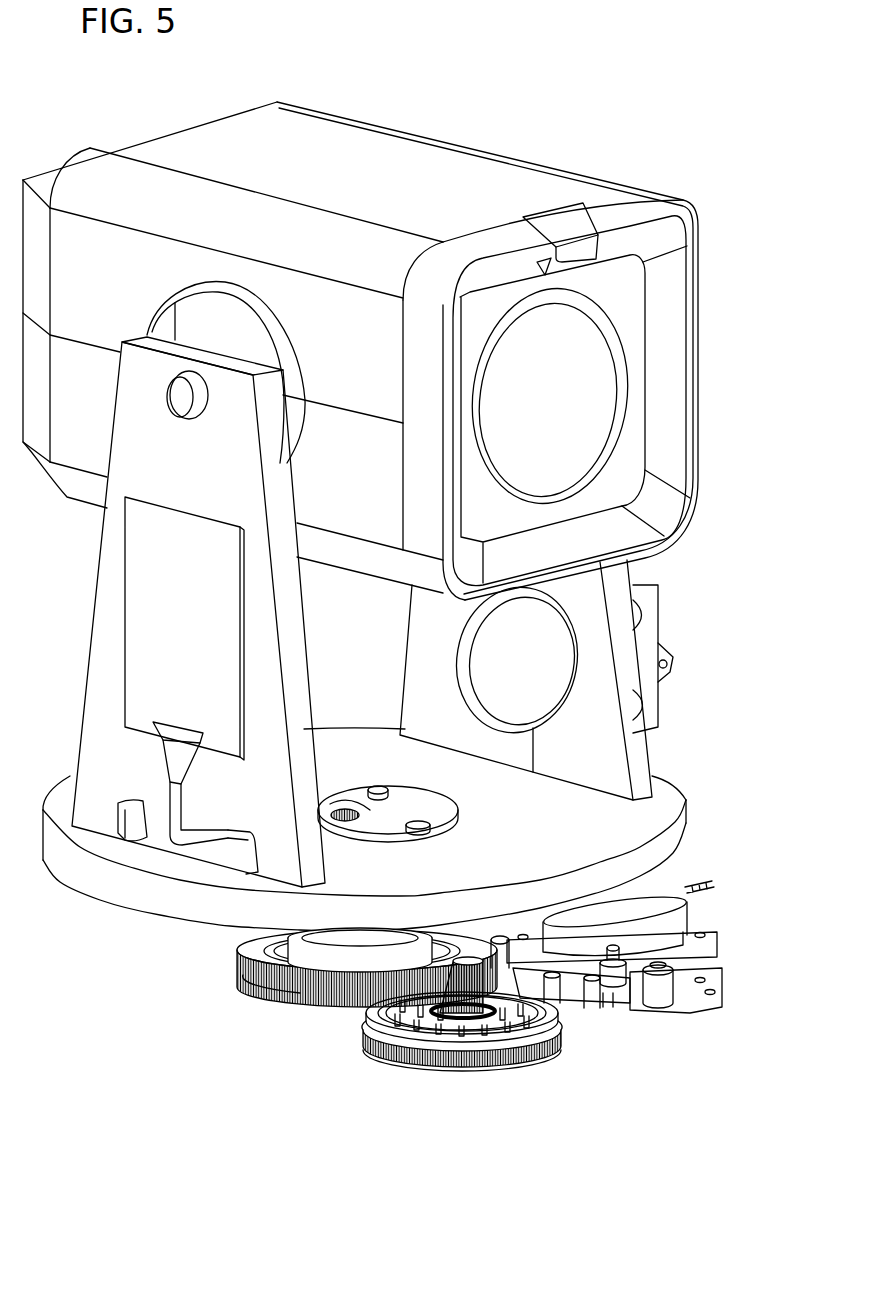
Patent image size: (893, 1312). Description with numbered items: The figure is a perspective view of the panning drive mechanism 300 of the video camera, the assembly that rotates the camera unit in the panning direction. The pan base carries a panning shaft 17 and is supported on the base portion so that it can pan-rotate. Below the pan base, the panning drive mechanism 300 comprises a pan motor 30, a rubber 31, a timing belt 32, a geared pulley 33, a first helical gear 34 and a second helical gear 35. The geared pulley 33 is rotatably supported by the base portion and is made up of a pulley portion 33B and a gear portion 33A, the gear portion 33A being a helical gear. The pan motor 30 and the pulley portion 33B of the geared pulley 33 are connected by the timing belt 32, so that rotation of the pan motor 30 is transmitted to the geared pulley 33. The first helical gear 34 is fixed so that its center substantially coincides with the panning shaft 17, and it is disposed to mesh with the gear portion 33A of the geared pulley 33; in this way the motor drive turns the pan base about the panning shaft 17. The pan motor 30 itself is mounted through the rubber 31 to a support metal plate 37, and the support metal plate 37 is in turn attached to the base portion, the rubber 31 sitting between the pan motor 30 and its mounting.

The panning shaft 17 is at (355, 945).
The pan motor 30 is at (643, 945).
The rubber 31 is at (673, 1000).
The timing belt 32 is at (499, 1048).
The geared pulley 33 is at (365, 1012).
The gear portion 33A is at (455, 1012).
The pulley portion 33B is at (412, 1003).
The first helical gear 34 is at (236, 953).
The second helical gear 35 is at (272, 968).
The support metal plate 37 is at (723, 980).
The panning drive mechanism 300 is at (772, 1158).